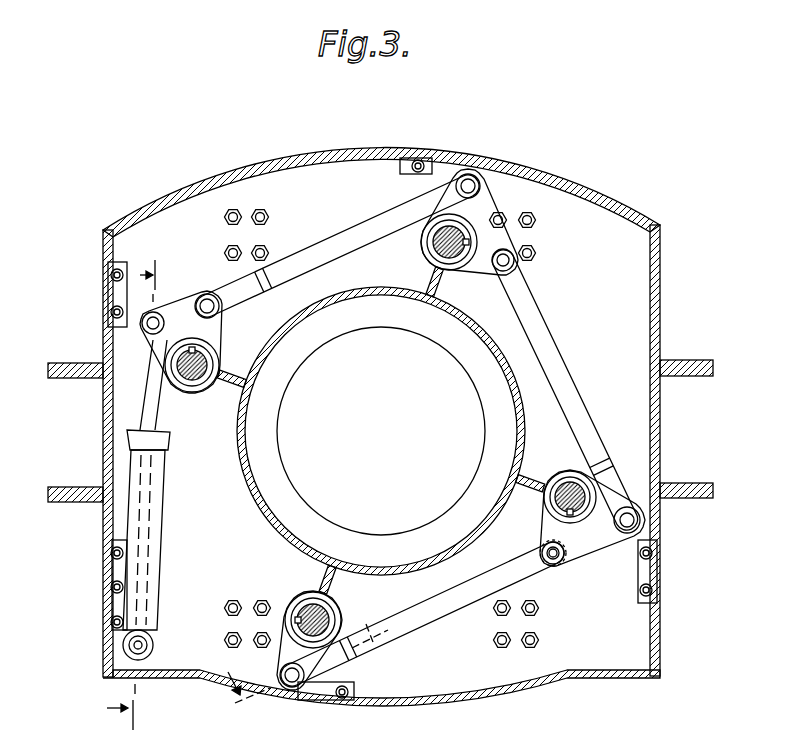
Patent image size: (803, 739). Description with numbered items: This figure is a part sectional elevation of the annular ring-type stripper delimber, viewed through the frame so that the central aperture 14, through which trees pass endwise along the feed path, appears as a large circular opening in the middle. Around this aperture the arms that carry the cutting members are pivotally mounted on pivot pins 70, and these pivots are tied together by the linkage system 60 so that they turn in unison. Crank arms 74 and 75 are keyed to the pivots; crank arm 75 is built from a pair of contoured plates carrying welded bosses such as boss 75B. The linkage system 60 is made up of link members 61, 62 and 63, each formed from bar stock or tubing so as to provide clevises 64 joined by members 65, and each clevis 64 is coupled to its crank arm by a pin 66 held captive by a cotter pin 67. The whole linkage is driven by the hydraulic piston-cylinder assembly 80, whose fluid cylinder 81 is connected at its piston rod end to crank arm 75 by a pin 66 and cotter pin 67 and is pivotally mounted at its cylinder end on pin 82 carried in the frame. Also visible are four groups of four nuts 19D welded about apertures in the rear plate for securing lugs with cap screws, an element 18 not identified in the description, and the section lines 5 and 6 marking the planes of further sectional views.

The section line 5- 5 is at (121, 491).
The section line 6- 6 is at (301, 645).
The central aperture 14 is at (462, 382).
The radial strut 18 is at (516, 473).
The nuts 19D is at (538, 638).
The linkage system 60 is at (576, 338).
The link member 61 is at (433, 598).
The link member 62 is at (582, 396).
The link member 63 is at (331, 245).
The clevis 64 is at (523, 578).
The member 65 is at (396, 622).
The pin 66 is at (142, 322).
The cotter pin 67 is at (158, 318).
The pivot pin 70 is at (192, 380).
The crank arm 74 is at (603, 540).
The crank arm 75 is at (222, 326).
The boss 75B is at (588, 458).
The hydraulic piston-cylinder assembly 80 is at (150, 508).
The fluid cylinder 81 is at (143, 567).
The pin 82 is at (147, 645).